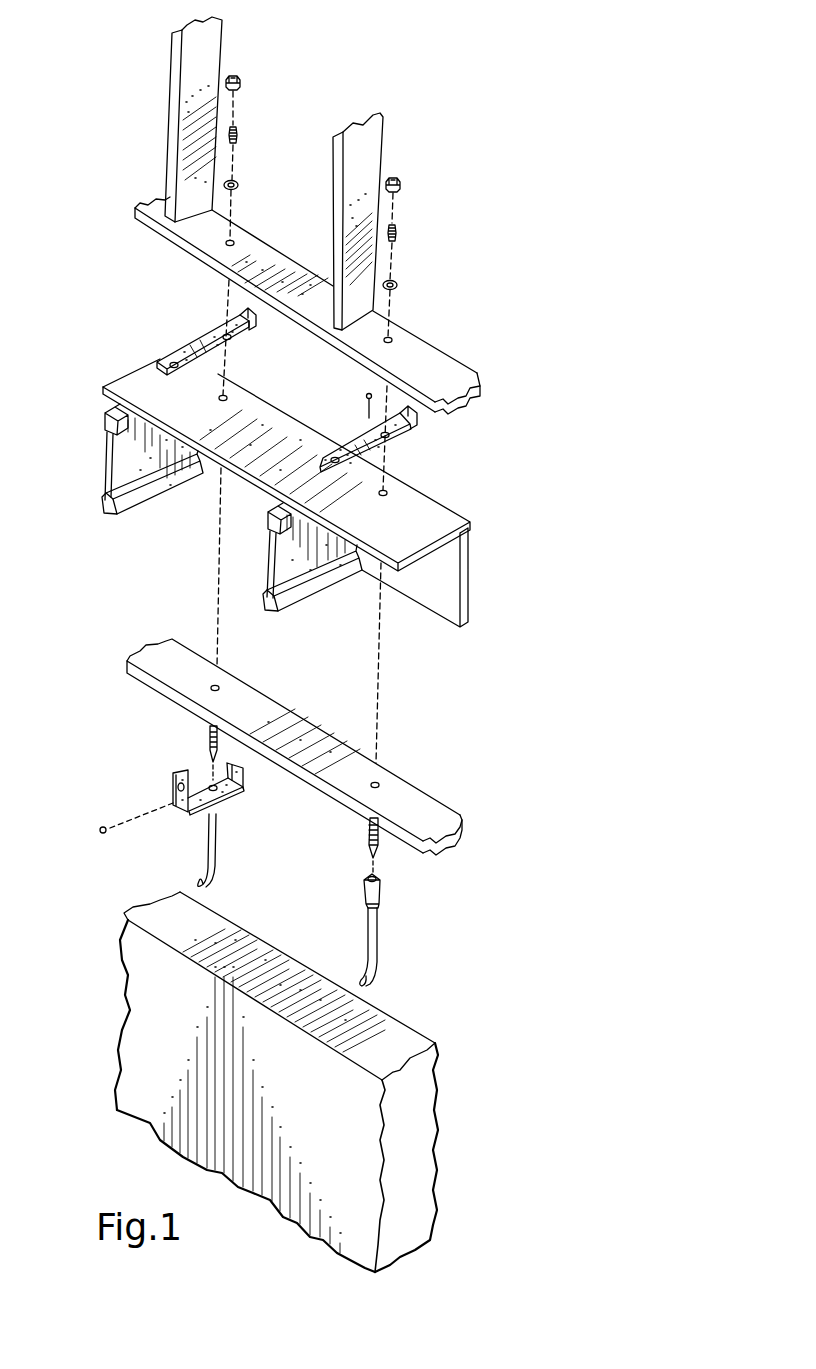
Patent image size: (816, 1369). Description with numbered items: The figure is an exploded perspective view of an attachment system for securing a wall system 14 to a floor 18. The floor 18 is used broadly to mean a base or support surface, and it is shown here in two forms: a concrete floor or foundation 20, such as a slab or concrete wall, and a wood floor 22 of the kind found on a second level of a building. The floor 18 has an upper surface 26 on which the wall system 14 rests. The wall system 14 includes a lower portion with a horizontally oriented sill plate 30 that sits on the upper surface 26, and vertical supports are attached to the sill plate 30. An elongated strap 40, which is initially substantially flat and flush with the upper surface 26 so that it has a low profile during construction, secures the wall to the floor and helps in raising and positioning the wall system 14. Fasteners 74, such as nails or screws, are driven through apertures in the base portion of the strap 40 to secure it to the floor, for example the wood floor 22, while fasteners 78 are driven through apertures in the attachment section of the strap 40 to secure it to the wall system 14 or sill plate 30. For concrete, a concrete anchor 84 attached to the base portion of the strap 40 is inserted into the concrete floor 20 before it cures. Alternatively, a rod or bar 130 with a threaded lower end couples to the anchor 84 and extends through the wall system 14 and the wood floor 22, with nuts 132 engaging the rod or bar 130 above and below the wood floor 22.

The wall system 14 is at (372, 167).
The floor 18 is at (420, 1172).
The concrete floor or foundation 20 is at (425, 1118).
The wood floor 22 is at (474, 588).
The upper surface 26 is at (440, 518).
The sill plate 30 is at (433, 358).
The strap 40 is at (217, 337).
The fasteners 74 is at (367, 402).
The fasteners 78 is at (99, 830).
The concrete anchor 84 is at (217, 851).
The rod or bar 130 is at (234, 166).
The nuts 132 is at (241, 86).